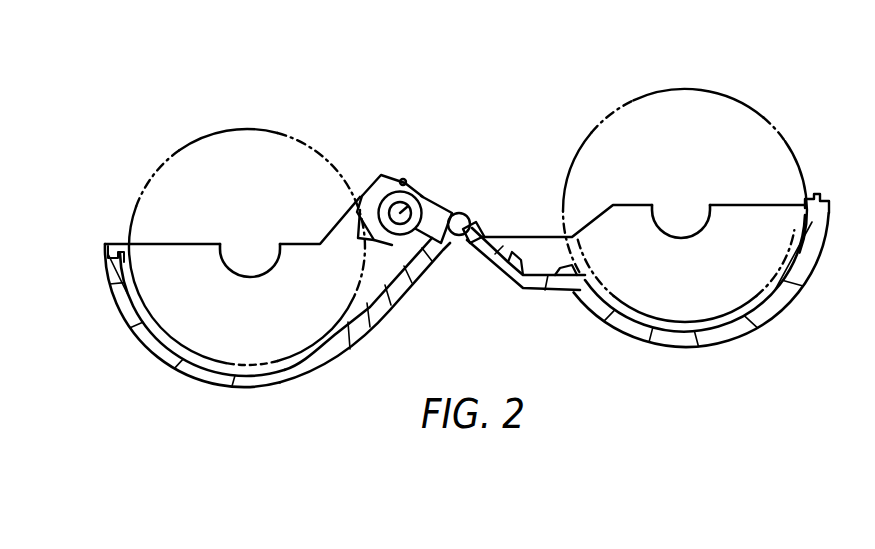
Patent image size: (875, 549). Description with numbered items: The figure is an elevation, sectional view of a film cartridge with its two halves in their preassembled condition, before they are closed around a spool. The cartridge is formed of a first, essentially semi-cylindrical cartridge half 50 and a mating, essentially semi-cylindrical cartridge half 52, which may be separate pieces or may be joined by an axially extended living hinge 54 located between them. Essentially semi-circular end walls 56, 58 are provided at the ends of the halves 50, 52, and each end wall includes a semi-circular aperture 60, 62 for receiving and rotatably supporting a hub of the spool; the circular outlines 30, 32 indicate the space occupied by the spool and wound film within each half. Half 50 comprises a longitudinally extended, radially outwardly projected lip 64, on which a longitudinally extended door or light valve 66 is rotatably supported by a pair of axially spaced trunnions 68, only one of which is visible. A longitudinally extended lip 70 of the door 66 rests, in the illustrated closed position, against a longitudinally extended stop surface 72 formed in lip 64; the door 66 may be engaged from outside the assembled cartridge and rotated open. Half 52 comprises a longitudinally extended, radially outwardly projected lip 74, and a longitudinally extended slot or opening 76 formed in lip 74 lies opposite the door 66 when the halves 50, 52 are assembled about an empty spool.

The roll (first spool) 30 is at (284, 131).
The roll (second spool) 32 is at (645, 92).
The first cartridge half 50 is at (198, 373).
The mating cartridge half 52 is at (727, 333).
The living hinge 54 is at (467, 247).
The end wall 56 is at (153, 252).
The end wall 58 is at (775, 218).
The semi-circular aperture 60 is at (231, 252).
The semi-circular aperture 62 is at (700, 213).
The lip 64 is at (437, 212).
The door 66 is at (389, 187).
The trunnion 68 is at (421, 200).
The lip 70 is at (460, 206).
The stop surface 72 is at (438, 258).
The lip 74 is at (528, 237).
The slot 76 is at (489, 264).